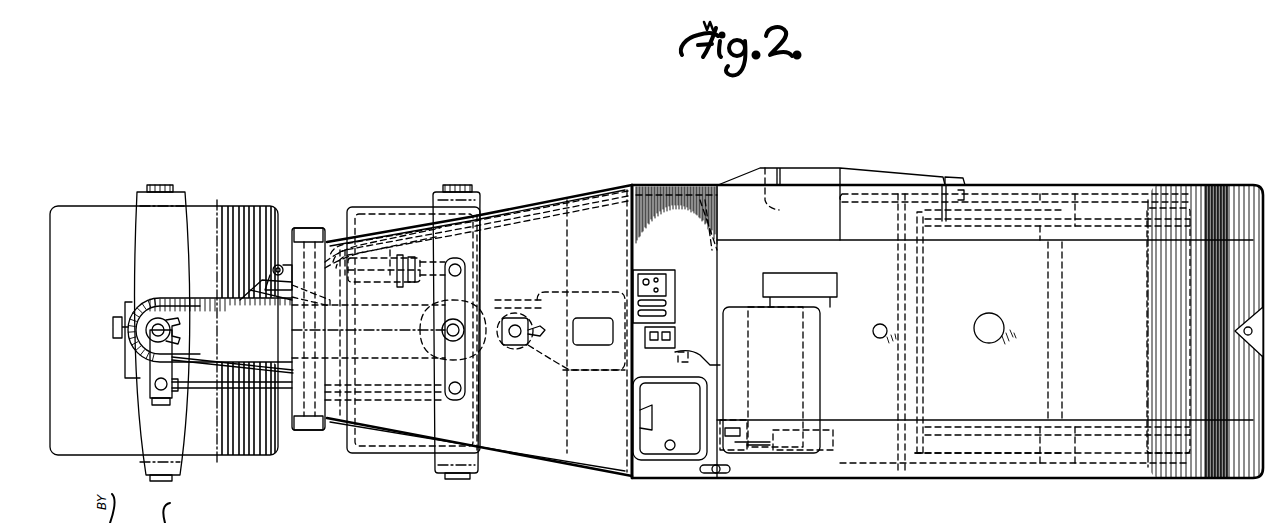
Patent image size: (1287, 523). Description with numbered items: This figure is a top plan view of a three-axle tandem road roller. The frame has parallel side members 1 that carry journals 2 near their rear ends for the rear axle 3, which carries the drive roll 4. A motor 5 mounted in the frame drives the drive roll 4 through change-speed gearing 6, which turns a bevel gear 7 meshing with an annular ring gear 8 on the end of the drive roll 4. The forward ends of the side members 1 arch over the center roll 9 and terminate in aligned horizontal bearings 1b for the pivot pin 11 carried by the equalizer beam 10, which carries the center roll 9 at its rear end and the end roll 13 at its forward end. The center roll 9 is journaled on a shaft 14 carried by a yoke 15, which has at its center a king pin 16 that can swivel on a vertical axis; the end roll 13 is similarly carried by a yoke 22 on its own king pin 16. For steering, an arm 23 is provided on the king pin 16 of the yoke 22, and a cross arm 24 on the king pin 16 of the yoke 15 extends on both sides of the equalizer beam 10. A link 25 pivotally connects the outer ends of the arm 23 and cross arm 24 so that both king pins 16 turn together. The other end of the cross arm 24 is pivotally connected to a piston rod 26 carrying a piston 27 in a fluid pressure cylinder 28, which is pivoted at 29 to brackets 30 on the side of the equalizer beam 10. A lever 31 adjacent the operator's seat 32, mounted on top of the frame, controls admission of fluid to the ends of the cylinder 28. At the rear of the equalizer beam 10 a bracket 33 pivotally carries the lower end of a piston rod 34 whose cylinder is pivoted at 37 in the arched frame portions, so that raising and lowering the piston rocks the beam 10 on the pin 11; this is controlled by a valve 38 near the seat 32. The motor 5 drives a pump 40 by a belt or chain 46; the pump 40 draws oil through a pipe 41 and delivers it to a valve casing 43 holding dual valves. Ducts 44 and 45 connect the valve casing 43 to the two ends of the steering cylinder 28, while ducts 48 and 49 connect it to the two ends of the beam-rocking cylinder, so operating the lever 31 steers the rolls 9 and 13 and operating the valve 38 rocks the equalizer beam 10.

The side members 1 is at (1012, 190).
The horizontal bearings 1b is at (318, 443).
The journals 2 is at (1068, 190).
The rear axle 3 is at (1065, 306).
The drive roll 4 is at (1175, 350).
The motor 5 is at (838, 350).
The change-speed gearing 6 is at (766, 168).
The bevel gear 7 is at (952, 178).
The annular ring gear 8 is at (1172, 190).
The center roll 9 is at (368, 452).
The equalizer beam 10 is at (212, 300).
The pivot pin 11 is at (318, 333).
The end roll 13 is at (244, 452).
The shaft 14 is at (460, 480).
The yoke 15 is at (478, 415).
The king pin 16 is at (152, 333).
The yoke 22 is at (180, 198).
The arm 23 is at (175, 350).
The cross arm 24 is at (470, 378).
The link 25 is at (282, 395).
The piston rod 26 is at (450, 260).
The piston 27 is at (355, 258).
The fluid pressure cylinder 28 is at (387, 255).
The pivot 29 is at (281, 262).
The brackets 30 is at (262, 280).
The lever 31 is at (678, 340).
The operator's seat 32 is at (670, 465).
The bracket 33 is at (523, 350).
The piston rod 34 is at (515, 325).
The pivot 37 is at (523, 360).
The valve 38 is at (645, 345).
The pump 40 is at (737, 424).
The pipe 41 is at (742, 475).
The valve casing 43 is at (712, 365).
The duct 44 is at (592, 193).
The return duct 45 is at (535, 207).
The belt, chain or the like 46 is at (768, 440).
The duct 48 is at (576, 385).
The duct 49 is at (580, 300).